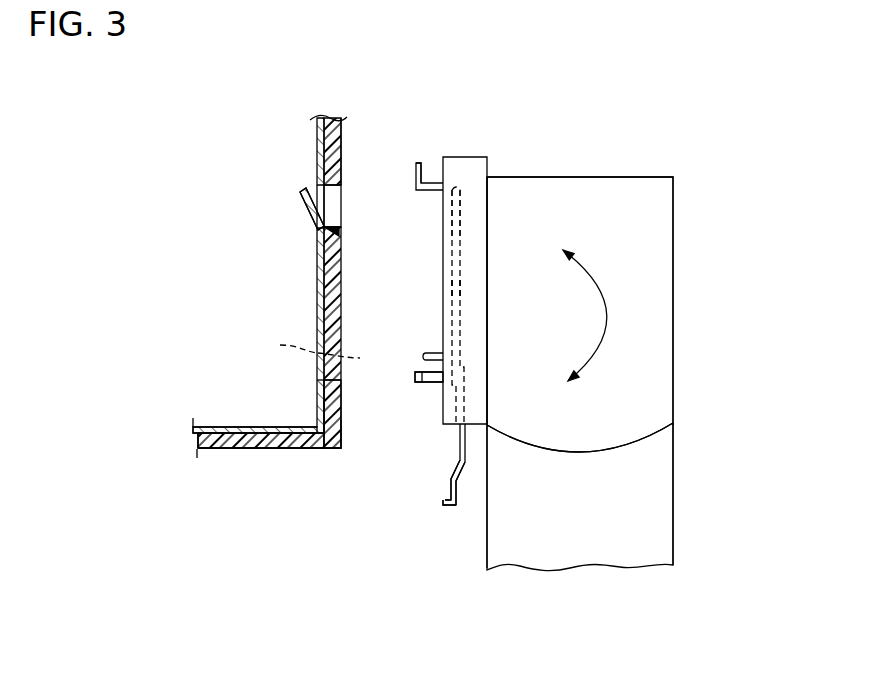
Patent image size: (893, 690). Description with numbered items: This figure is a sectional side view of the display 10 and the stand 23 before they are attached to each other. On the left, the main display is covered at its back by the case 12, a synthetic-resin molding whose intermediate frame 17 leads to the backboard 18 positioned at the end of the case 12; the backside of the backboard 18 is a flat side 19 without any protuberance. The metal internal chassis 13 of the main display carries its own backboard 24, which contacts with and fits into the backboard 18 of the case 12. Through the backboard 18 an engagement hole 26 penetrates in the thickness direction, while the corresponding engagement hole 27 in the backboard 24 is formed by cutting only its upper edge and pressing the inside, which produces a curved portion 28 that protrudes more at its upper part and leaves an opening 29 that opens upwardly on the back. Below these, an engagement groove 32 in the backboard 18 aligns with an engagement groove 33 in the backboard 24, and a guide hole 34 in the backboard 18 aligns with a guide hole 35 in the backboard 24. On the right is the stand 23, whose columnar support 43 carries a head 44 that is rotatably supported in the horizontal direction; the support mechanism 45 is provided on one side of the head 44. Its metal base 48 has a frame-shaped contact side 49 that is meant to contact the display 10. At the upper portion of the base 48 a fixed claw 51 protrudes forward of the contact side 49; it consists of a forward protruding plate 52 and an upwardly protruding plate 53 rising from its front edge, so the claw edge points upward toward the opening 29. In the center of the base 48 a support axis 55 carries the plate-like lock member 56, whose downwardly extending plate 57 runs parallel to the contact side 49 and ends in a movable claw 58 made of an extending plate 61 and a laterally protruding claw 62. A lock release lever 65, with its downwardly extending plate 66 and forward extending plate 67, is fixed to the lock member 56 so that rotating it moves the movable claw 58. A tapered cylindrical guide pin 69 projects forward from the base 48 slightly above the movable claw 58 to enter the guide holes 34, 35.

The display 10 is at (209, 460).
The case 12 is at (229, 460).
The internal chassis 13 is at (226, 427).
The intermediate frame 17 is at (258, 448).
The backboard 18 is at (341, 150).
The flat side 19 is at (343, 422).
The stand 23 is at (684, 193).
The backboard 24 is at (317, 296).
The engagement hole 26 is at (338, 229).
The engagement hole 27 is at (330, 192).
The curved portion 28 is at (301, 205).
The opening 29 is at (302, 191).
The engagement groove 32 is at (341, 381).
The engagement groove 33 is at (317, 380).
The guide hole 34 is at (357, 360).
The guide hole 35 is at (280, 345).
The columnar support 43 is at (673, 490).
The head 44 is at (673, 338).
The support mechanism 45 is at (464, 165).
The base 48 is at (470, 198).
The contact side 49 is at (445, 230).
The fixed claw 51 is at (400, 181).
The forward protruding plate 52 is at (422, 183).
The upwardly protruding plate 53 is at (418, 172).
The support axis 55 is at (458, 290).
The lock member 56 is at (435, 271).
The downwardly extending plate 57 is at (458, 290).
The movable claw 58 is at (440, 386).
The extending plate 61 is at (435, 386).
The claw 62 is at (423, 394).
The lock release lever 65 is at (446, 522).
The downwardly extending plate 66 is at (462, 492).
The forward extending plate 67 is at (440, 512).
The guide pin 69 is at (423, 357).